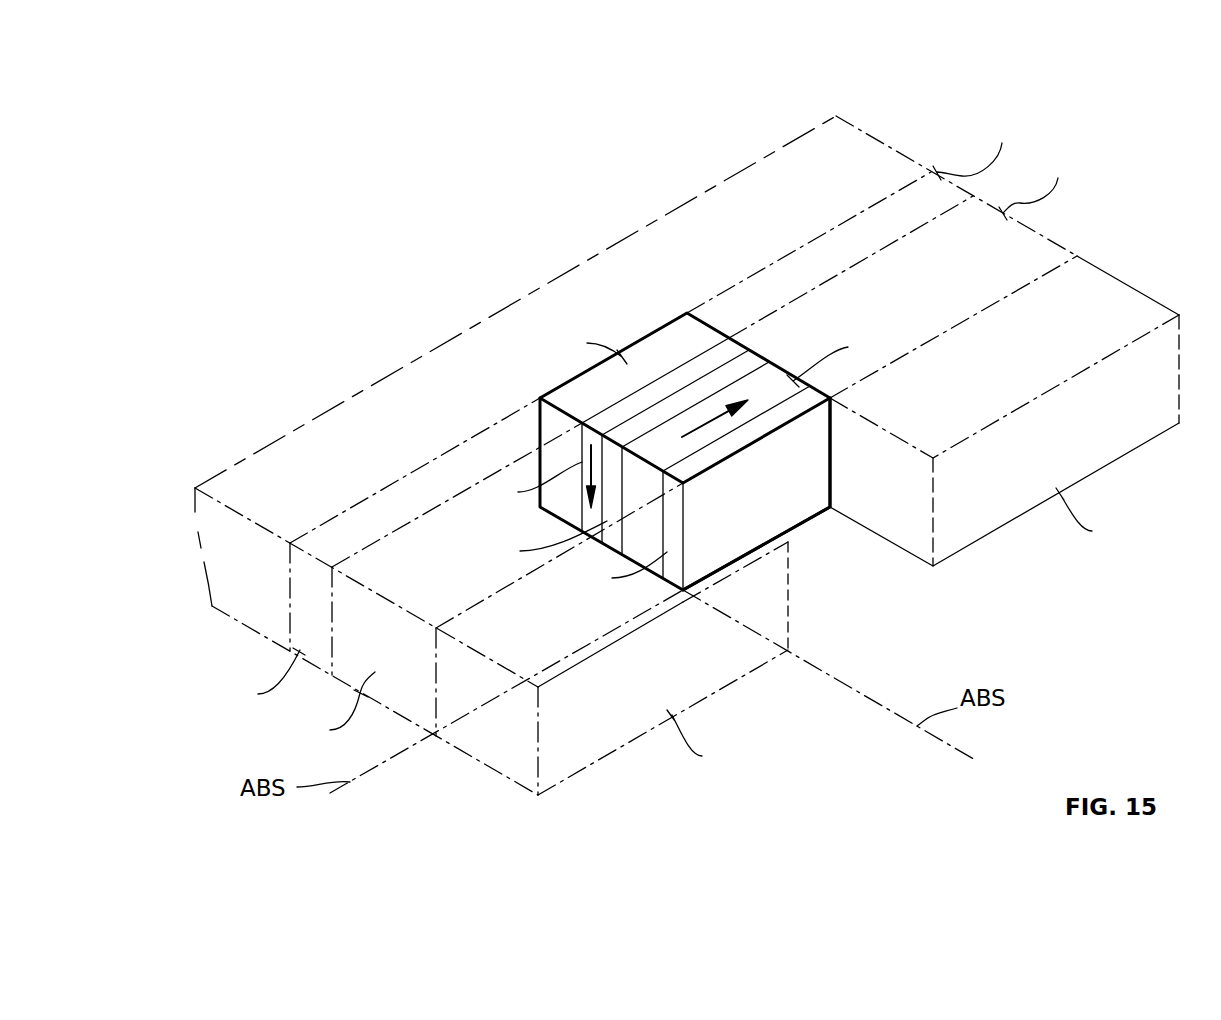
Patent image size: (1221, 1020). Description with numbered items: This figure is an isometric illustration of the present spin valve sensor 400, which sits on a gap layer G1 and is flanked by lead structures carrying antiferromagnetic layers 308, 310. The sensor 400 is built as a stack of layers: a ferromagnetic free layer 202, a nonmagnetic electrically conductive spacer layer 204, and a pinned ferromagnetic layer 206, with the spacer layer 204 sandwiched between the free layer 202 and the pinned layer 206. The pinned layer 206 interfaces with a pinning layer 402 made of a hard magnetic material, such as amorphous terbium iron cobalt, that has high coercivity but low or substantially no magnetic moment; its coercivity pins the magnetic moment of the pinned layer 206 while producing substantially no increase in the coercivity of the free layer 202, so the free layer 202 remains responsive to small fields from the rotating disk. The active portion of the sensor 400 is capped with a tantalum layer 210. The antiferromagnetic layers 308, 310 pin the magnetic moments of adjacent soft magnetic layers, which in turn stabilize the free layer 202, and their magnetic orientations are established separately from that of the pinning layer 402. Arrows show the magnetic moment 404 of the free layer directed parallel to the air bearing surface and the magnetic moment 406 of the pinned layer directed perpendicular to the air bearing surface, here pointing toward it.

The spin valve sensor 400 is at (918, 104).
The pinning layer 402 is at (798, 514).
The magnetic moment of free layer 404 is at (703, 430).
The magnetic moment of pinned layer 406 is at (582, 493).
The free layer 202 is at (647, 387).
The spacer layer 204 is at (710, 380).
The pinned layer 206 is at (782, 382).
The tantalum layer 210 is at (580, 390).
The antiferromagnetic layer 308 is at (593, 767).
The antiferromagnetic layer 310 is at (1004, 534).
The first gap layer G1 is at (669, 222).